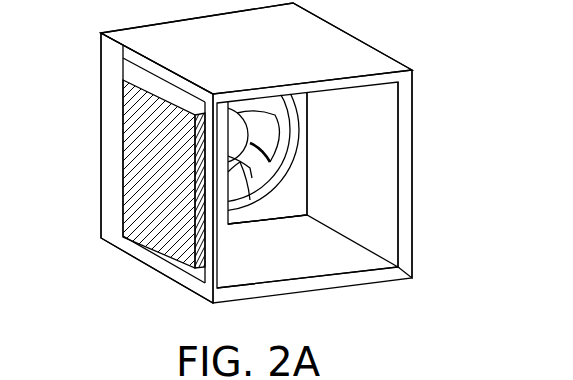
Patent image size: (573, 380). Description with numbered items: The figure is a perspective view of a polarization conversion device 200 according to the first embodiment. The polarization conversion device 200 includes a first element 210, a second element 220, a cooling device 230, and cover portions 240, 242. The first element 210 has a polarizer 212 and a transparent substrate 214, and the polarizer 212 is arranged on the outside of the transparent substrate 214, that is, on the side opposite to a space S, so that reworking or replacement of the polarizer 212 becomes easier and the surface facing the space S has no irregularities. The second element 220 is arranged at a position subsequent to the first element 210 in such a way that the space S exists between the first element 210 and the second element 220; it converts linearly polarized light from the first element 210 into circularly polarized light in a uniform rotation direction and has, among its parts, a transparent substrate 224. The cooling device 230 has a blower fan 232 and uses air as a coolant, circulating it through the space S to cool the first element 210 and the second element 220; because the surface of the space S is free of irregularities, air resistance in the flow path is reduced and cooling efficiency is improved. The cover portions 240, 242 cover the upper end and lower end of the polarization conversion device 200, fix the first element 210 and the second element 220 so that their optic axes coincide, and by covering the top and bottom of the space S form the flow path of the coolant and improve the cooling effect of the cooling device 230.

The polarization conversion device 200 is at (474, 18).
The first element 210 is at (92, 267).
The polarizer 212 is at (166, 248).
The transparent substrate 214 is at (212, 275).
The second element 220 is at (419, 166).
The transparent substrate 224 is at (403, 228).
The cooling device 230 is at (110, 85).
The blower fan 232 is at (268, 131).
The cover portion 240 is at (345, 48).
The cover portion 242 is at (350, 262).
The space S is at (288, 249).